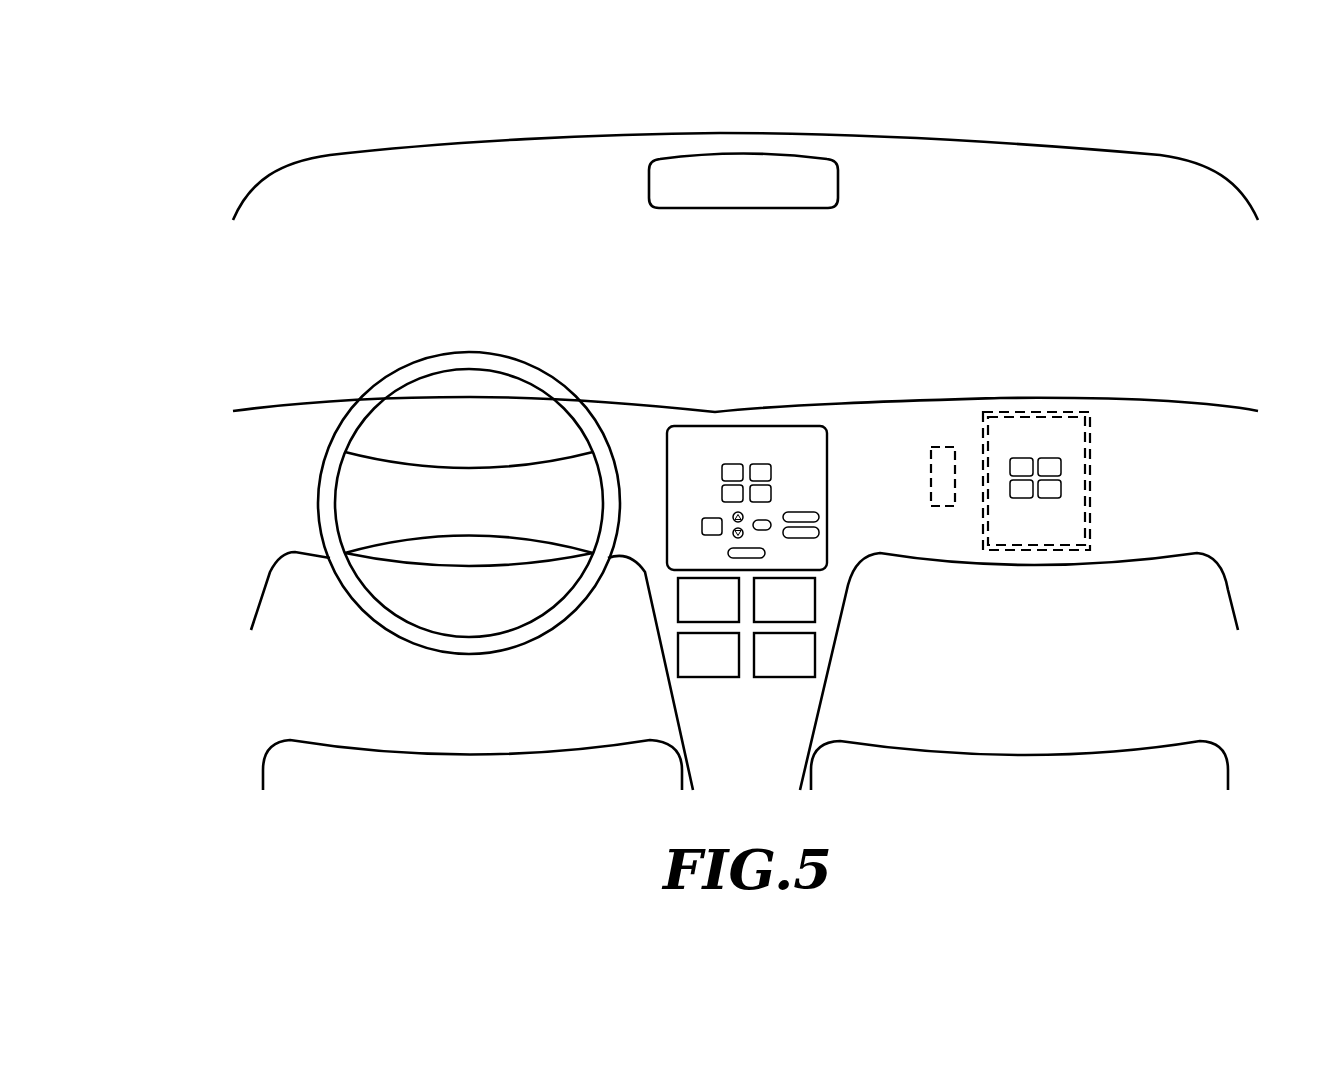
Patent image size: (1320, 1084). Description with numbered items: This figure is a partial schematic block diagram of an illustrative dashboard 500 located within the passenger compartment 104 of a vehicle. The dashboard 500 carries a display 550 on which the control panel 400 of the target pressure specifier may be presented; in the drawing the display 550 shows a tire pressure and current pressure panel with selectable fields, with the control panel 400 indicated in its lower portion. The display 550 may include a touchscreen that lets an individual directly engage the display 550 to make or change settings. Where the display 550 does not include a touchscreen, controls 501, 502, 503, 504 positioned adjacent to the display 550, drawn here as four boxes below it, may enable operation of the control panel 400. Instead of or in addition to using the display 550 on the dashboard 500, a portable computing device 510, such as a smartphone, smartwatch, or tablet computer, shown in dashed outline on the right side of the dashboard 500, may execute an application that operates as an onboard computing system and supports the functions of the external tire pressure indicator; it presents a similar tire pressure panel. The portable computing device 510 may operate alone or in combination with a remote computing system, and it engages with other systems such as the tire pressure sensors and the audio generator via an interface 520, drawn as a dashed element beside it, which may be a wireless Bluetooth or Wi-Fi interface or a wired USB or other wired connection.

The passenger compartment 104 is at (220, 148).
The dashboard 500 is at (229, 358).
The display 550 is at (739, 463).
The control panel 400 is at (783, 563).
The control 501 is at (693, 614).
The control 502 is at (769, 614).
The control 503 is at (693, 669).
The control 504 is at (769, 669).
The portable computing device 510 is at (1022, 534).
The interface 520 is at (941, 456).